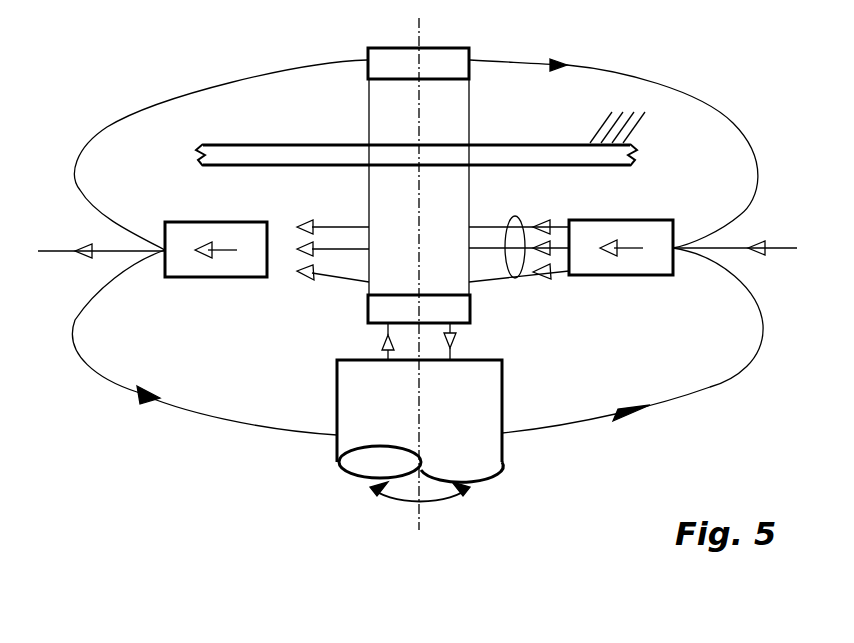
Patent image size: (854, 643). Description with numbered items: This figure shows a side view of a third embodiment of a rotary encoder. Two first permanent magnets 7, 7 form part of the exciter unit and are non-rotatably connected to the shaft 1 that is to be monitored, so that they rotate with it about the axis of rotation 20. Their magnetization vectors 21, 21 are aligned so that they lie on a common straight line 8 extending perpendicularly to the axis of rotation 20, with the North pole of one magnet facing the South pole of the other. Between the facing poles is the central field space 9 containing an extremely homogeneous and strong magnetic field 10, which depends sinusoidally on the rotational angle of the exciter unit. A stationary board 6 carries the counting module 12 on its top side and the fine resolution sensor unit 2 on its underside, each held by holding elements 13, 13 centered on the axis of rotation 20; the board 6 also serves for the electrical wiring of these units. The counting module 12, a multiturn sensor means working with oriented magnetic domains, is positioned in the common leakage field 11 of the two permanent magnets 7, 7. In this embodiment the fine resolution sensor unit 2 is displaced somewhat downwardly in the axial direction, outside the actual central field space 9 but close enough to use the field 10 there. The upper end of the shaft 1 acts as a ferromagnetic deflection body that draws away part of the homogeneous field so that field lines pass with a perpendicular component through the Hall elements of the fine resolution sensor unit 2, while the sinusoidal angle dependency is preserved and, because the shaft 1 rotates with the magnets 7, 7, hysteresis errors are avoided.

The shaft 1 is at (487, 447).
The fine resolution sensor unit 2 is at (458, 308).
The board 6 is at (617, 155).
The first permanent magnet 7 is at (183, 278).
The common straight line 8 is at (767, 252).
The central field space 9 is at (337, 260).
The magnetic field 10 is at (518, 282).
The leakage field 11 is at (593, 73).
The counting module 12 is at (455, 63).
The holding element 13 is at (369, 120).
The axis of rotation 20 is at (422, 498).
The magnetization vector 21 is at (216, 252).